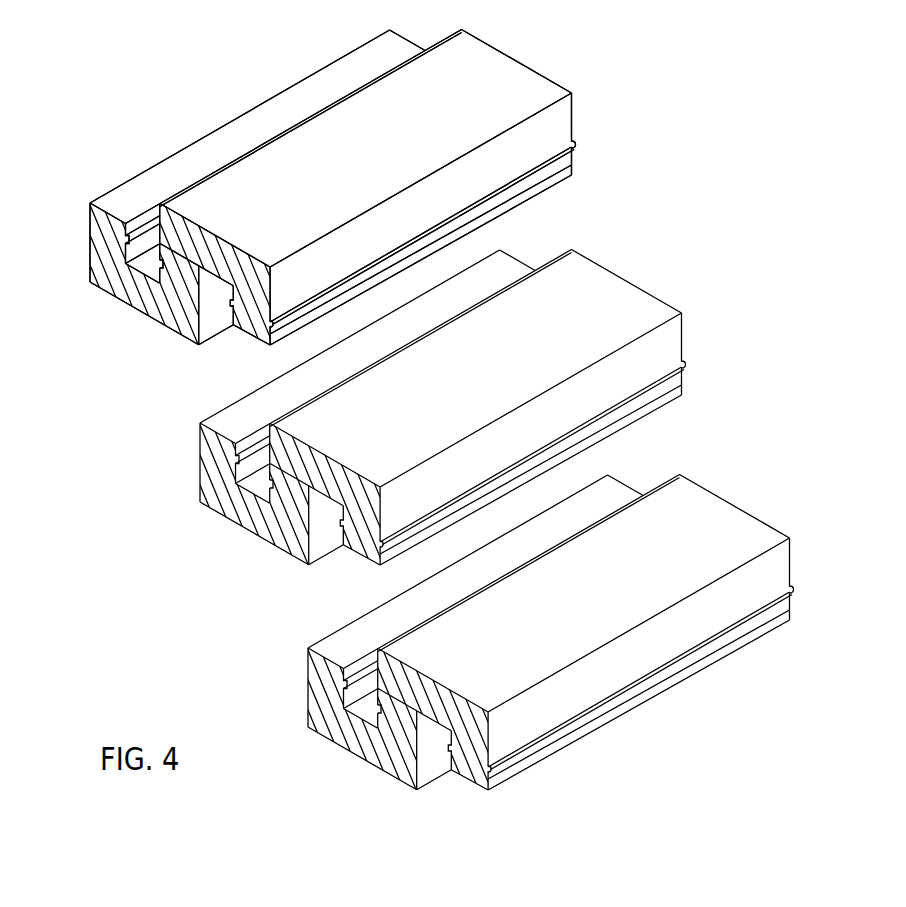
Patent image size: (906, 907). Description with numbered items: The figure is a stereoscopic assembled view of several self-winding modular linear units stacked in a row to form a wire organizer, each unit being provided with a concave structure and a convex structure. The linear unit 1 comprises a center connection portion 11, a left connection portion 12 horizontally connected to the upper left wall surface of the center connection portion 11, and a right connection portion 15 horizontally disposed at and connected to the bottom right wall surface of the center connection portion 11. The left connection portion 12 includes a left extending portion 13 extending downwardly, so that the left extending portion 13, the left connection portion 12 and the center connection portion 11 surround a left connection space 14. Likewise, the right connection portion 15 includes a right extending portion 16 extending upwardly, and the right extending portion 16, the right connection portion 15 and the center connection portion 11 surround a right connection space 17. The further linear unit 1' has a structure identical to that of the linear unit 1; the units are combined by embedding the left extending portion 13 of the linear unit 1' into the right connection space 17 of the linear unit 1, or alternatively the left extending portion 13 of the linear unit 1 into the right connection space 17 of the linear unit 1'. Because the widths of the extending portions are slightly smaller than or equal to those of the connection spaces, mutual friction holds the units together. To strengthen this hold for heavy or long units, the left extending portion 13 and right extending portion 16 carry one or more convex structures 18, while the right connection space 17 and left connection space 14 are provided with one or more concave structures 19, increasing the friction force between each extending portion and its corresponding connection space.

The linear unit 1 is at (288, 186).
The linear unit 1' is at (438, 504).
The center connection portion 11 is at (189, 198).
The left connection portion 12 is at (367, 188).
The left extending portion 13 is at (350, 572).
The left connection space 14 is at (178, 319).
The right connection portion 15 is at (138, 318).
The right extending portion 16 is at (12, 49).
The right connection space 17 is at (135, 174).
The convex structure 18 is at (490, 493).
The concave structure 19 is at (211, 490).